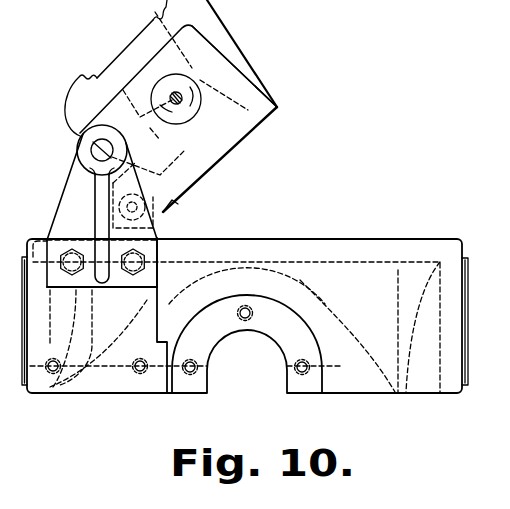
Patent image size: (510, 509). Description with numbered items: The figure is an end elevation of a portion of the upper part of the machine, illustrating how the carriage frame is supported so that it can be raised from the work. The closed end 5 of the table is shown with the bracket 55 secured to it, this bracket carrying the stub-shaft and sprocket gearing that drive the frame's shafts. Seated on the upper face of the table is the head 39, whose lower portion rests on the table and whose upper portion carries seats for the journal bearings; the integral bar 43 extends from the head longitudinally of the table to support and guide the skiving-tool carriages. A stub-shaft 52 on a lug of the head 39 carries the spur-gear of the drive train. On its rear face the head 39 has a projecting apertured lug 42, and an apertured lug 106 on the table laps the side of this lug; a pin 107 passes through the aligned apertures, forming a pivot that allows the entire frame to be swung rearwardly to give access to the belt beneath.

The closed end 5 is at (416, 244).
The apertured lug 106 is at (160, 229).
The bracket 55 is at (102, 206).
The integral bar 43 is at (221, 22).
The head 39 is at (262, 87).
The stub-shaft 52 is at (183, 100).
The projecting apertured lug 42 is at (166, 211).
The pin 107 is at (134, 205).